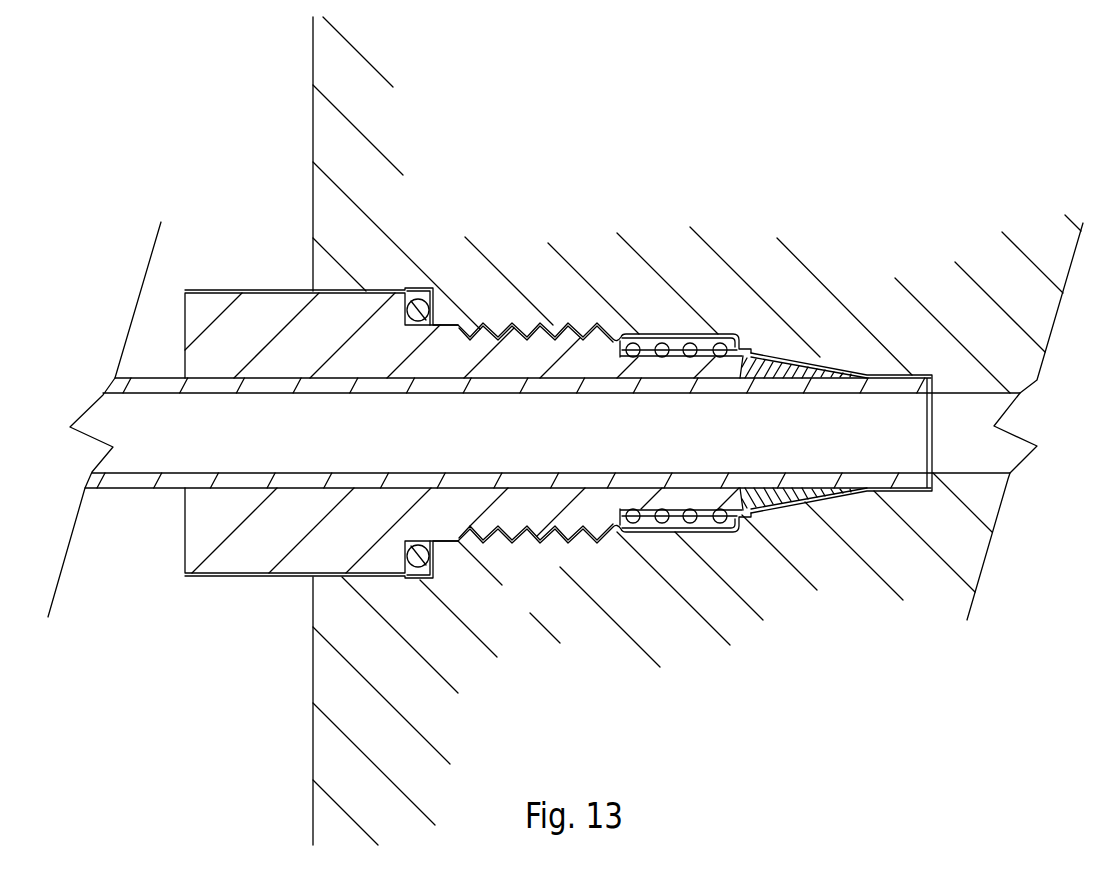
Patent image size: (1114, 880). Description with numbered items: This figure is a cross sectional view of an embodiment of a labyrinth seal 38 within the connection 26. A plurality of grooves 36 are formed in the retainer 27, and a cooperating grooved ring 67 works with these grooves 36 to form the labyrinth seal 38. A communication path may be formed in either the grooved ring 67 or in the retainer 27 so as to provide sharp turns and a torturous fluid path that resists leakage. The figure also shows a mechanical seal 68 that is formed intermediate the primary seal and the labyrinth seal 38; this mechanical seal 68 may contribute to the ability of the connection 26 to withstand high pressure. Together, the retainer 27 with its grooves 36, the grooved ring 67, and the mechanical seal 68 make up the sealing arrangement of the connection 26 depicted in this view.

The connection 26 is at (466, 242).
The retainer 27 is at (577, 506).
The grooves 36 is at (752, 355).
The labyrinth seal 38 is at (693, 332).
The grooved ring 67 is at (670, 338).
The mechanical seal 68 is at (746, 530).